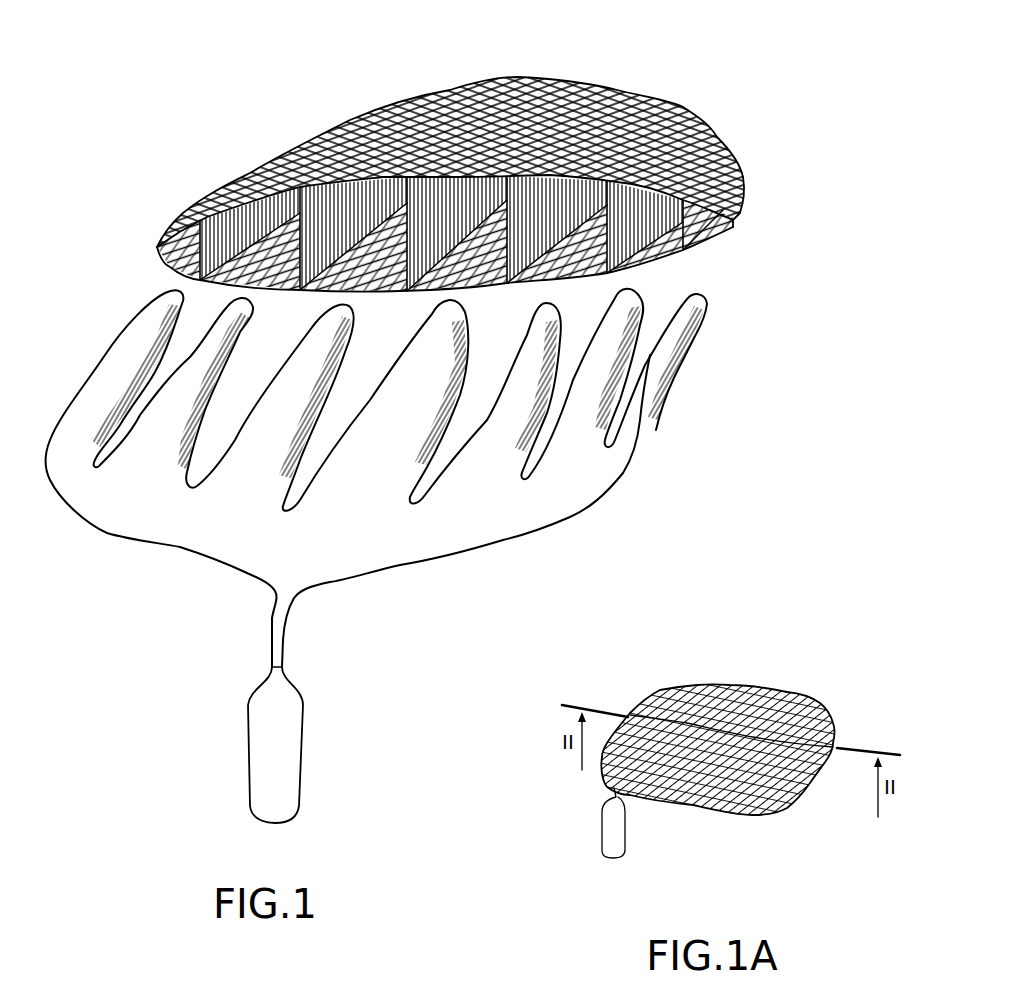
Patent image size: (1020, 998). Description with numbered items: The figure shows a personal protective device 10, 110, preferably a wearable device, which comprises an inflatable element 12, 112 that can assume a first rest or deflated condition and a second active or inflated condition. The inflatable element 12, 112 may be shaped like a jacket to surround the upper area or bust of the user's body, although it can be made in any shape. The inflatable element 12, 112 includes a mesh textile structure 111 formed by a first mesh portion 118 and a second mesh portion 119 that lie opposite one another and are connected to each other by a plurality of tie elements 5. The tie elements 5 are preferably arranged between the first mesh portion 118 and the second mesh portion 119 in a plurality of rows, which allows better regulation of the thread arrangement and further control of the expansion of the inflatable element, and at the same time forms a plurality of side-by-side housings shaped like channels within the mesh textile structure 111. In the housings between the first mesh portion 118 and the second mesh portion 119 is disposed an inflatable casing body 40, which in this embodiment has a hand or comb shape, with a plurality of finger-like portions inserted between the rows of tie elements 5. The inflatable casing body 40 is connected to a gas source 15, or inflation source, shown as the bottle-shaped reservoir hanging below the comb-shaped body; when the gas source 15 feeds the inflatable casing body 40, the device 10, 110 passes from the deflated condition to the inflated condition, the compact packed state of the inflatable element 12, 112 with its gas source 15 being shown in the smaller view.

In FIG. 1, the personal protective device 110 is at (431, 420).
In FIG. 1A, the personal protective device 110 is at (726, 747).
In FIG. 1, the mesh textile structure 111 is at (487, 160).
In FIG. 1, the first mesh portion 118 is at (413, 165).
In FIG. 1, the tie elements 5 is at (737, 220).
In FIG. 1, the second mesh portion 119 is at (673, 257).
In FIG. 1, the inflatable casing body 40 is at (673, 375).
In FIG. 1, the gas source 15 is at (293, 753).
In FIG. 1A, the gas source 15 is at (608, 838).
In FIG. 1A, the inflatable element 12 is at (726, 708).
In FIG. 1A, the inflatable element 112 is at (758, 680).
In FIG. 1A, the personal protective device 10 is at (726, 747).